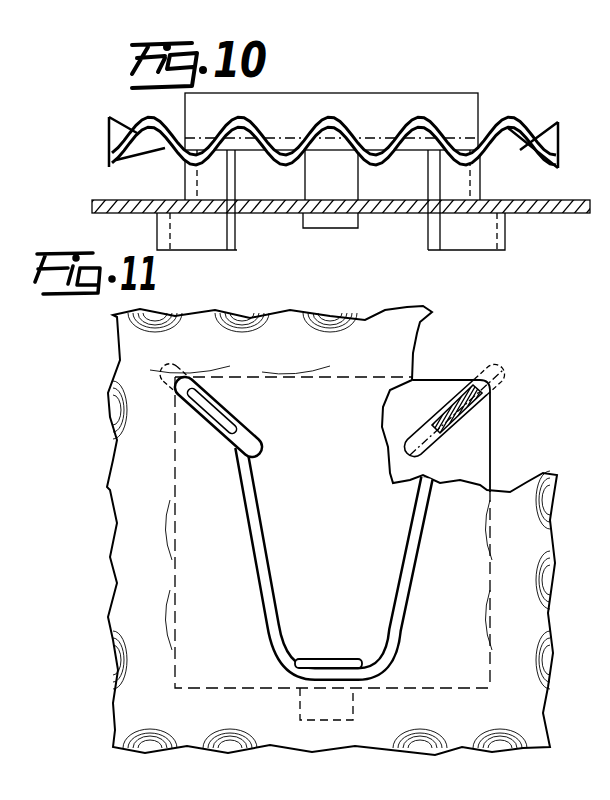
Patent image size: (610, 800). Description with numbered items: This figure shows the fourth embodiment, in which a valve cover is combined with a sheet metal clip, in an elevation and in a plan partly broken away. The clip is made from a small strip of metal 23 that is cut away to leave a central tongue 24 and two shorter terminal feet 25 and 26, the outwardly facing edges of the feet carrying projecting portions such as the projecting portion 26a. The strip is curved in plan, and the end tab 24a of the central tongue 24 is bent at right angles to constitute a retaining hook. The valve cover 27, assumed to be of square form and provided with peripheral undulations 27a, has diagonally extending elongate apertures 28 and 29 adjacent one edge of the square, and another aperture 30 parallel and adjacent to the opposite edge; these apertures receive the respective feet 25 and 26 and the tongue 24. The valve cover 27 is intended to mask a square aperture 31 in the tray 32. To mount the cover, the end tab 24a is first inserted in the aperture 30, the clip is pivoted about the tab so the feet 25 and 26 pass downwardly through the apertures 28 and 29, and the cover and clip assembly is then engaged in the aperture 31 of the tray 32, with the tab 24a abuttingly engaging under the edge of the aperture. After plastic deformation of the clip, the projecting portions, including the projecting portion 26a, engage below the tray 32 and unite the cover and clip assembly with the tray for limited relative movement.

In FIG. 10, the strip of metal 23 is at (411, 110).
In FIG. 11, the strip of metal 23 is at (262, 614).
In FIG. 10, the central tongue 24 is at (340, 188).
In FIG. 11, the central tongue 24 is at (297, 672).
In FIG. 10, the end tab 24a is at (342, 220).
In FIG. 11, the terminal foot 25 is at (246, 456).
In FIG. 10, the terminal foot 26 is at (455, 186).
In FIG. 11, the terminal foot 26 is at (462, 390).
In FIG. 10, the projecting portion 26a is at (480, 238).
In FIG. 10, the valve cover 27 is at (514, 114).
In FIG. 11, the valve cover 27 is at (335, 418).
In FIG. 10, the peripheral undulations 27a is at (312, 132).
In FIG. 11, the peripheral undulations 27a is at (363, 338).
In FIG. 11, the elongate aperture 28 is at (213, 423).
In FIG. 11, the elongate aperture 29 is at (492, 463).
In FIG. 11, the aperture 30 is at (333, 658).
In FIG. 10, the square aperture 31 is at (265, 213).
In FIG. 10, the tray 32 is at (125, 205).